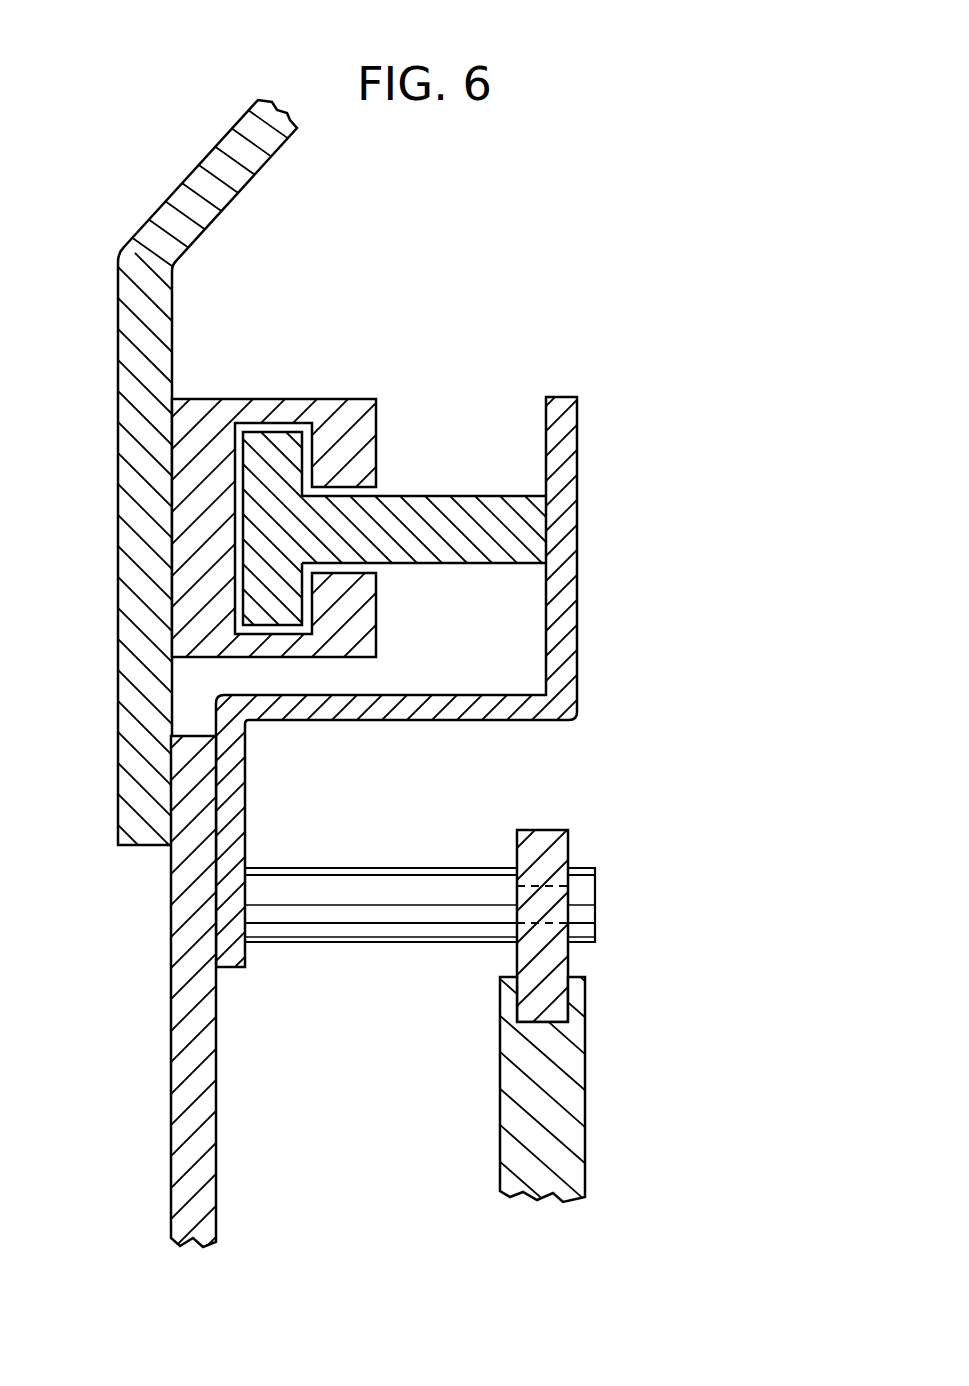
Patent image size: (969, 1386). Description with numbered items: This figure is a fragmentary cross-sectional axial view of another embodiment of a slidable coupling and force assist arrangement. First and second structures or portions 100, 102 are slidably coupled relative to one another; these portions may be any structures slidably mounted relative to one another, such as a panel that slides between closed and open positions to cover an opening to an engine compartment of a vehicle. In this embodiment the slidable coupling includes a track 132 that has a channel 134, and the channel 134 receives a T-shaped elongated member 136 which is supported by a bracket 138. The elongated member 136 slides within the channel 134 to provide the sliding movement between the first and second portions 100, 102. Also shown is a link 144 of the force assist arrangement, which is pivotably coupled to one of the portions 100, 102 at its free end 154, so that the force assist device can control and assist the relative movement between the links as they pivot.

The first structure or portion 100 is at (172, 185).
The second structure or portion 102 is at (172, 1108).
The track 132 is at (193, 400).
The channel 134 is at (273, 428).
The T-shaped elongated member 136 is at (408, 495).
The bracket 138 is at (577, 624).
The link 144 is at (585, 1093).
The free end 154 is at (568, 868).